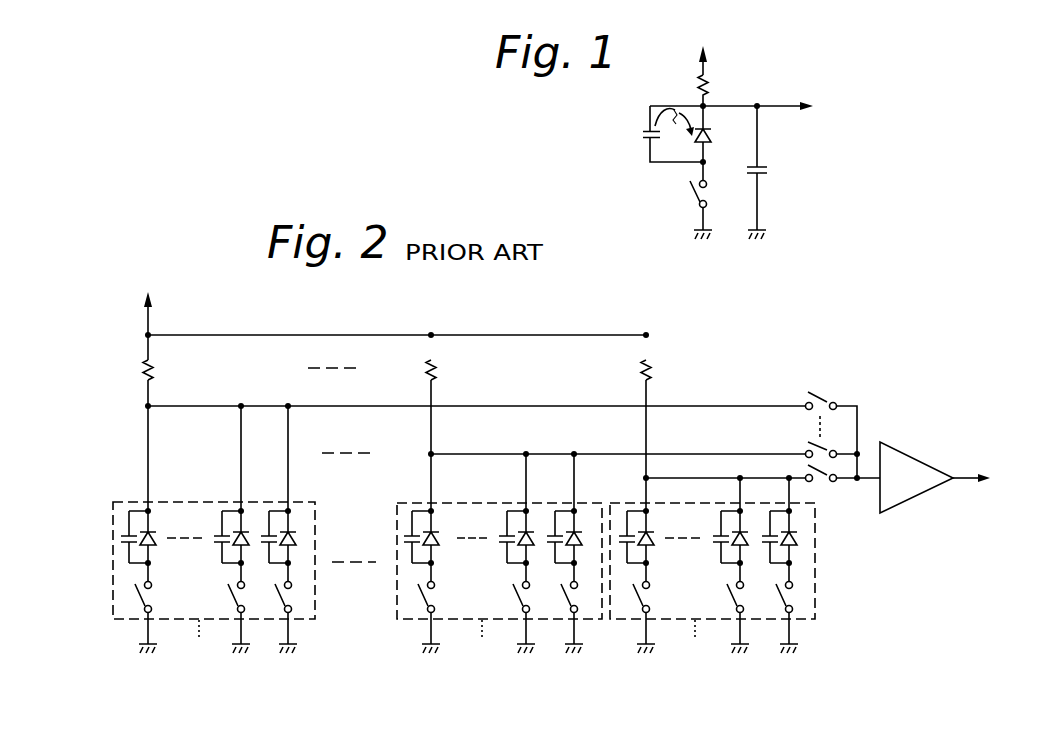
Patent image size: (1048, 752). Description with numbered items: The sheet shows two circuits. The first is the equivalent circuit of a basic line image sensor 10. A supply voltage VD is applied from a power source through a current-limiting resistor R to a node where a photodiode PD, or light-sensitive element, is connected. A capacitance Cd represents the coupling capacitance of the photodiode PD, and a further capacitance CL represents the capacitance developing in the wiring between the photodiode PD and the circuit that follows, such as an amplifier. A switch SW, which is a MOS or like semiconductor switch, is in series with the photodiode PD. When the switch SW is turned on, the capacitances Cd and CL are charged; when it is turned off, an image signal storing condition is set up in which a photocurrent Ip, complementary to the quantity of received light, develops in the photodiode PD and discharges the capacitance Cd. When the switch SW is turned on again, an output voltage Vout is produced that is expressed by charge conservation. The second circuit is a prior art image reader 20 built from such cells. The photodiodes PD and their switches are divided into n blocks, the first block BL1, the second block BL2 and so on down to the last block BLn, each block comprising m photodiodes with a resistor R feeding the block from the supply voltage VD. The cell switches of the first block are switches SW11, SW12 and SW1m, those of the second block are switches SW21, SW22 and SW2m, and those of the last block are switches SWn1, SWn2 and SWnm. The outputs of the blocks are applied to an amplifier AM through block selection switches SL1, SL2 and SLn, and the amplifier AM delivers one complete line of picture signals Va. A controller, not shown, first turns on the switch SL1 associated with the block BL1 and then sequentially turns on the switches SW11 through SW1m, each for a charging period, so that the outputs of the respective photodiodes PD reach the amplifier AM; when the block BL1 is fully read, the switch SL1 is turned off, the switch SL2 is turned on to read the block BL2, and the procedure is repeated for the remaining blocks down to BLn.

In FIG. 1, the line image sensor 10 is at (840, 75).
In FIG. 2, the image reader 20 is at (788, 355).
In FIG. 1, the resistor R is at (708, 88).
In FIG. 2, the resistor R is at (669, 369).
In FIG. 1, the photodiode PD is at (711, 137).
In FIG. 2, the photodiode PD is at (833, 572).
In FIG. 1, the capacitance Cd is at (643, 135).
In FIG. 1, the photocurrent Ip is at (674, 139).
In FIG. 1, the switch SW is at (692, 192).
In FIG. 1, the capacitance CL is at (770, 172).
In FIG. 1, the voltage VD is at (704, 49).
In FIG. 2, the voltage VD is at (150, 314).
In FIG. 1, the output voltage Vout is at (754, 108).
In FIG. 2, the switch SLn is at (826, 390).
In FIG. 2, the switch SL2 is at (809, 443).
In FIG. 2, the switch SL1 is at (820, 483).
In FIG. 2, the amplifier AM is at (911, 449).
In FIG. 2, the picture signals Va is at (990, 482).
In FIG. 2, the block BLn is at (214, 583).
In FIG. 2, the block BL2 is at (499, 584).
In FIG. 2, the block BL1 is at (712, 585).
In FIG. 2, the switch SWnm is at (137, 606).
In FIG. 2, the switch SWn2 is at (234, 600).
In FIG. 2, the switch SWn1 is at (279, 606).
In FIG. 2, the switch SW2m is at (420, 604).
In FIG. 2, the switch SW22 is at (518, 600).
In FIG. 2, the switch SW21 is at (565, 604).
In FIG. 2, the switch SW1m is at (640, 604).
In FIG. 2, the switch SW12 is at (731, 598).
In FIG. 2, the switch SW11 is at (782, 604).